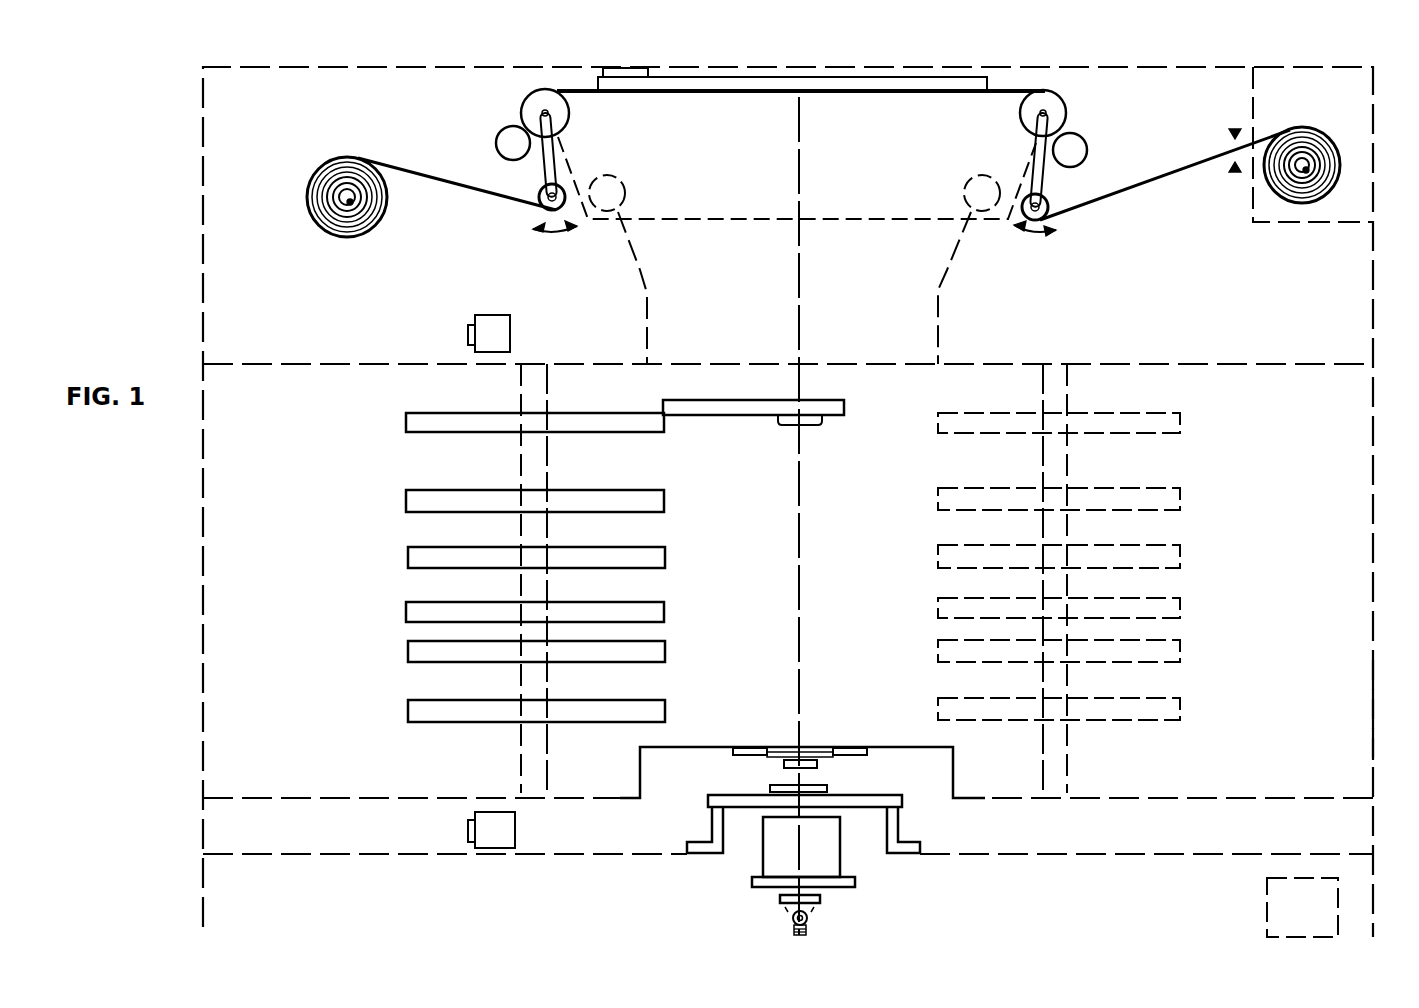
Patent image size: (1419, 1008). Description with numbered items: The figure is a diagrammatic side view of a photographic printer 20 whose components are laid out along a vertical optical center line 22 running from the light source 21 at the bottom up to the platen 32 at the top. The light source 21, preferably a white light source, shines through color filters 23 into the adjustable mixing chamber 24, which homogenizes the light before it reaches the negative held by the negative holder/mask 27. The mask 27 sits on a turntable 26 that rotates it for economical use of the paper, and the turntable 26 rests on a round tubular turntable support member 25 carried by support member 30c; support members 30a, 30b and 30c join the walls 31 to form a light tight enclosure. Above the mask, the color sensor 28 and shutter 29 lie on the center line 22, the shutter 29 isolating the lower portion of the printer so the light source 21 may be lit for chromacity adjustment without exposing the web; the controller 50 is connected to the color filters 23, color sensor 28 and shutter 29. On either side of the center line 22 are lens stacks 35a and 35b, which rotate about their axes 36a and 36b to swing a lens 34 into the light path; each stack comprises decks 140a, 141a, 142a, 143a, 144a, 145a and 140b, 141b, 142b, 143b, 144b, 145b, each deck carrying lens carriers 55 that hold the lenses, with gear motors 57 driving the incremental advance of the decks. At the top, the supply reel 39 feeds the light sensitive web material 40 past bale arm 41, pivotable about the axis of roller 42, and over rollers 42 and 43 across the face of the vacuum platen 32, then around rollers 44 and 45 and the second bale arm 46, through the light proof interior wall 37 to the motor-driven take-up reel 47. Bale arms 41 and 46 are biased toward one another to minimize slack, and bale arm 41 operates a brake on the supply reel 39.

The printer 20 is at (1412, 615).
The light source 21 is at (810, 919).
The optical center line 22 is at (799, 510).
The color filters 23 is at (782, 899).
The adjustable chamber 24 is at (770, 848).
The turntable support member 25 is at (897, 825).
The turntable 26 is at (862, 795).
The negative holder/mask 27 is at (775, 788).
The color sensor 28 is at (807, 758).
The shutter 29 is at (792, 748).
The support member 30a is at (1265, 798).
The support member 30b is at (1210, 364).
The support member 30c is at (1288, 842).
The walls 31 is at (1375, 735).
The platen 32 is at (866, 90).
The lens 34 is at (818, 425).
The lens stack 35a is at (457, 579).
The lens stack 35b is at (1093, 578).
The axis 36a is at (524, 455).
The axis 36b is at (1060, 459).
The interior wall 37 is at (1253, 95).
The supply reel 39 is at (340, 195).
The web material 40 is at (458, 184).
The take-up roller / bale arm 41 is at (540, 188).
The roller 42 is at (506, 140).
The roller 43 is at (535, 103).
The roller 44 is at (1030, 113).
The roller 45 is at (1078, 144).
The second take-up roller / bale arm 46 is at (1042, 185).
The take-up reel 47 is at (1303, 163).
The controller 50 is at (1272, 898).
The lens carrier 55 is at (694, 415).
The gear motor 57 is at (497, 320).
The deck 140a is at (420, 413).
The deck 141a is at (420, 490).
The deck 142a is at (420, 547).
The deck 143a is at (416, 602).
The deck 144a is at (416, 641).
The deck 145a is at (420, 705).
The deck 140b is at (1175, 413).
The deck 141b is at (945, 490).
The deck 142b is at (1175, 547).
The deck 143b is at (1175, 598).
The deck 144b is at (1178, 642).
The deck 145b is at (1175, 700).